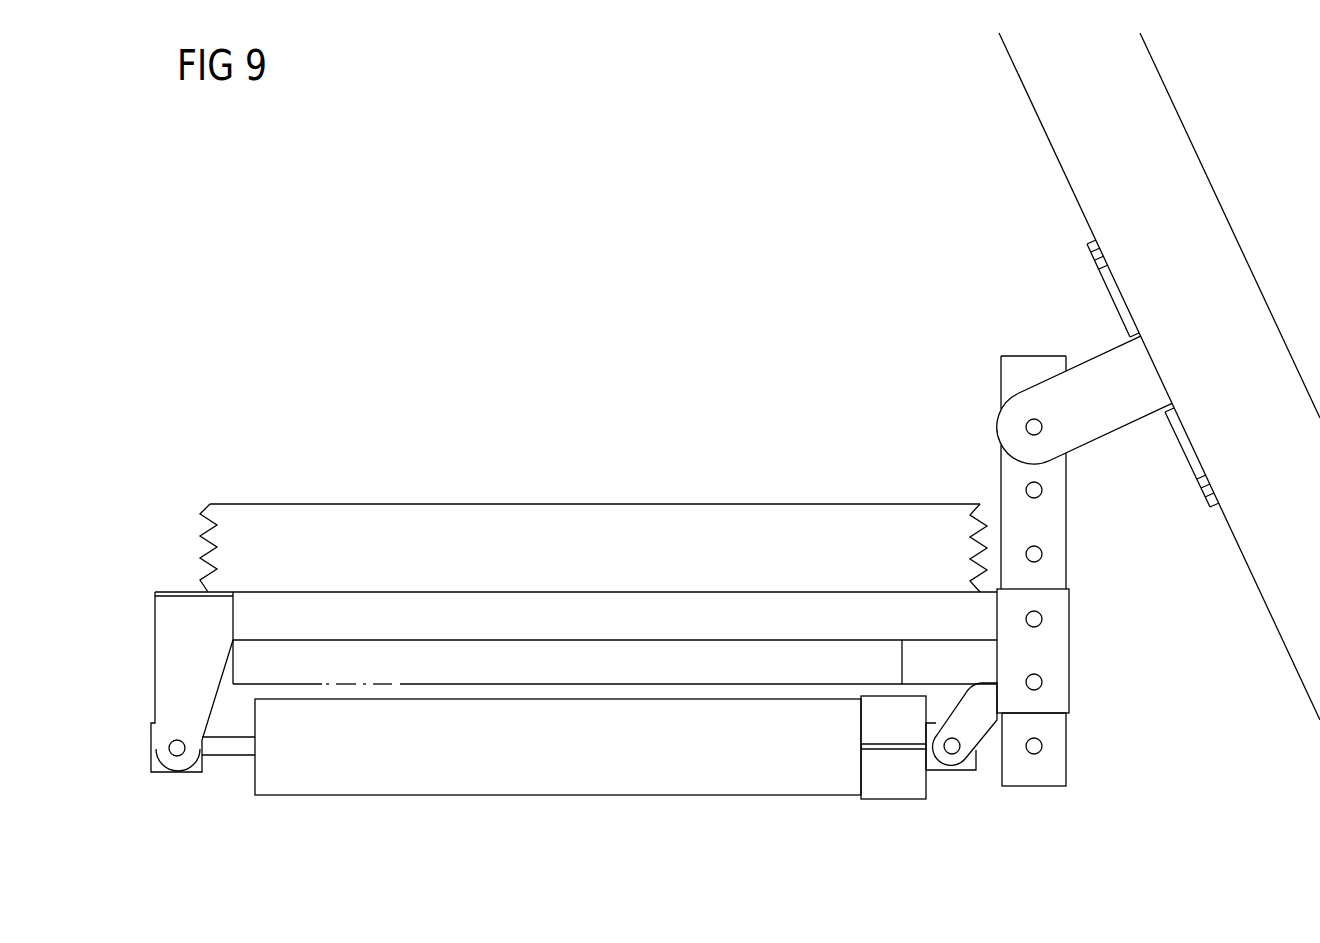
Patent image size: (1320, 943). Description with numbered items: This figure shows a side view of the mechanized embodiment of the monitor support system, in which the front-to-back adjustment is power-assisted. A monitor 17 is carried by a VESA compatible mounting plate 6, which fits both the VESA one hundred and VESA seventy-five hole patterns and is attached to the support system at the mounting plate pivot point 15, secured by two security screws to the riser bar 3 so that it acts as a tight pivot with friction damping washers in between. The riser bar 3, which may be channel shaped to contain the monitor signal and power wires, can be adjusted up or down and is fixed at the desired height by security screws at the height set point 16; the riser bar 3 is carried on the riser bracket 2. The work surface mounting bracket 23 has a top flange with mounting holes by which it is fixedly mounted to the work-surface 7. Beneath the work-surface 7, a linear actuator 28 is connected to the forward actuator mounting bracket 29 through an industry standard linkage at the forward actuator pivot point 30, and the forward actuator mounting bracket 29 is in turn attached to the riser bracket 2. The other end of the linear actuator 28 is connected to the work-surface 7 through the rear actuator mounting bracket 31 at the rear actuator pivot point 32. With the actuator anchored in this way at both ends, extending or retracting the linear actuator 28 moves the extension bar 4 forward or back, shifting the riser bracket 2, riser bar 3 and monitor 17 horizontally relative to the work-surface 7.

The riser bracket 2 is at (1069, 705).
The riser bar 3 is at (1066, 756).
The extension bar 4 is at (615, 540).
The VESA compatible mounting plate 6 is at (1115, 303).
The work-surface 7 is at (593, 509).
The mounting plate pivot point 15 is at (996, 472).
The height set point 16 is at (1041, 624).
The monitor 17 is at (1047, 137).
The work surface mounting bracket 23 is at (576, 536).
The linear actuator 28 is at (589, 785).
The forward actuator mounting bracket 29 is at (995, 763).
The forward actuator pivot point 30 is at (993, 811).
The rear actuator mounting bracket 31 is at (212, 758).
The rear actuator pivot point 32 is at (234, 797).